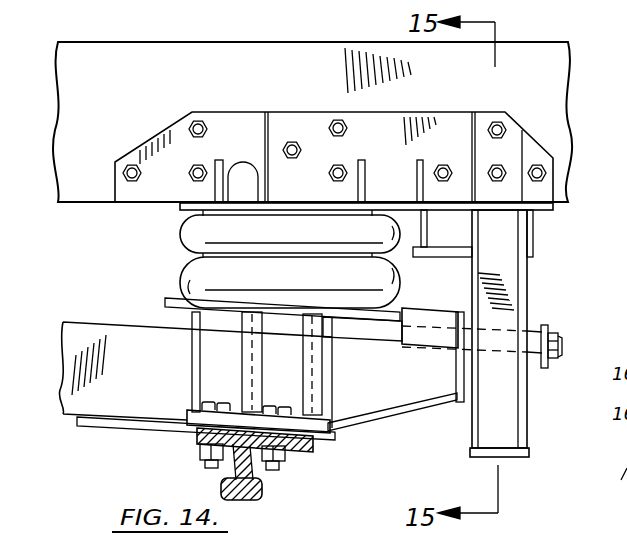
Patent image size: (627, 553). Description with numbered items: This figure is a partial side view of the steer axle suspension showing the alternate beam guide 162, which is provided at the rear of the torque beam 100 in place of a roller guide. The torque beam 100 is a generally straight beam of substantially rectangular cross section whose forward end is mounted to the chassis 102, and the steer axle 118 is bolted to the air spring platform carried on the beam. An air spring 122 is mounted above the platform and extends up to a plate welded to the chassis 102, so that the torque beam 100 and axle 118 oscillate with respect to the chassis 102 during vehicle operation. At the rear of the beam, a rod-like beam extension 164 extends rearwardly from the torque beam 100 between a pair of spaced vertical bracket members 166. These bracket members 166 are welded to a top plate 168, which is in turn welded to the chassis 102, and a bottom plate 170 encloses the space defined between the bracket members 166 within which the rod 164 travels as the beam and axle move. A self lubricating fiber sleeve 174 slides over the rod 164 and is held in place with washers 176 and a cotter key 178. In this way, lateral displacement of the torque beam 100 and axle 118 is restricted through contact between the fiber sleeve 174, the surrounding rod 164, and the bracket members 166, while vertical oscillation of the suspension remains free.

The torque beam 100 is at (362, 410).
The chassis 102 is at (565, 134).
The steer axle 118 is at (256, 487).
The air spring 122 is at (183, 277).
The alternate beam guide 162 is at (533, 416).
The beam extension 164 is at (560, 345).
The bracket members 166 is at (490, 425).
The top plate 168 is at (547, 210).
The bottom plate 170 is at (510, 459).
The self lubricating fiber sleeve 174 is at (530, 362).
The washers 176 is at (543, 323).
The cotter key 178 is at (557, 333).